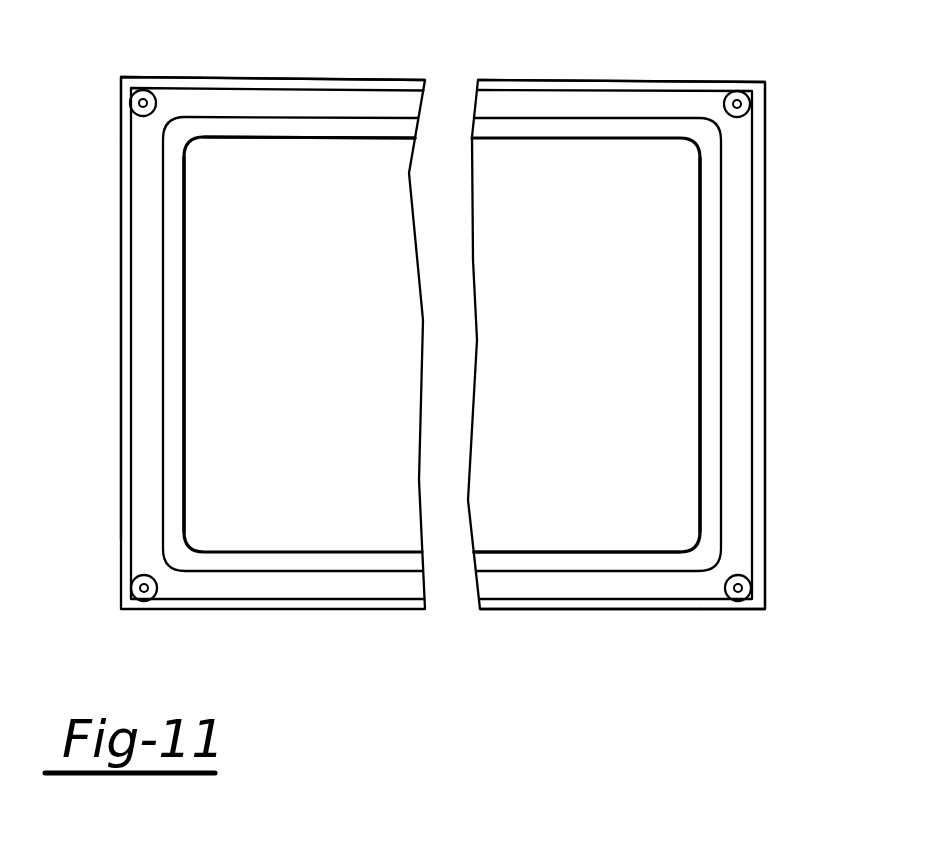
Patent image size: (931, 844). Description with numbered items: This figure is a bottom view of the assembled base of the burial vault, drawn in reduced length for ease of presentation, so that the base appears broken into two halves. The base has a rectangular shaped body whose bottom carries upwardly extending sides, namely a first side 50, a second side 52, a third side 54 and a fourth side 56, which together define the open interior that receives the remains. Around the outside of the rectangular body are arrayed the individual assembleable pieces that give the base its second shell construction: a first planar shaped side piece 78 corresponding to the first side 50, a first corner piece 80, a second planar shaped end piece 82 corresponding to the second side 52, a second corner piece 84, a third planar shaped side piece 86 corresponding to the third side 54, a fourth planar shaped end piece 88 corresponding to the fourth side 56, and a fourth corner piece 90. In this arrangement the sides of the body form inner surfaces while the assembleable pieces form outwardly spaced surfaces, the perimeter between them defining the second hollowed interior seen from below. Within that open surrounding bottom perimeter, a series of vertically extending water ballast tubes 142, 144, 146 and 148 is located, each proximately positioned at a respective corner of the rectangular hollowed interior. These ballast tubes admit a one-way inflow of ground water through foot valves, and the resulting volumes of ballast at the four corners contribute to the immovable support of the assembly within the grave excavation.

The first side 50 is at (328, 140).
The second side 52 is at (698, 329).
The third side 54 is at (560, 552).
The fourth side 56 is at (212, 288).
The first planar shaped side piece 78 is at (316, 78).
The first corner piece 80 is at (745, 81).
The second planar shaped end piece 82 is at (765, 328).
The second corner piece 84 is at (757, 610).
The third planar shaped side piece 86 is at (537, 610).
The fourth planar shaped end piece 88 is at (120, 303).
The fourth corner piece 90 is at (120, 77).
The ballast tube 142 is at (133, 588).
The ballast tube 144 is at (748, 593).
The ballast tube 146 is at (750, 107).
The ballast tube 148 is at (133, 112).